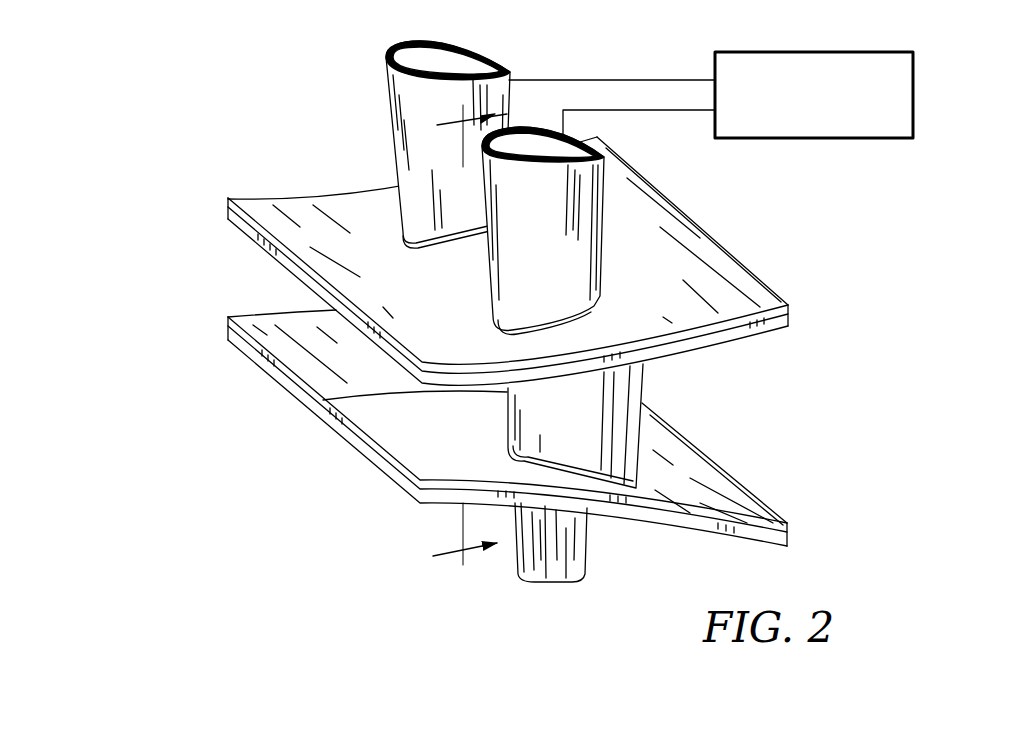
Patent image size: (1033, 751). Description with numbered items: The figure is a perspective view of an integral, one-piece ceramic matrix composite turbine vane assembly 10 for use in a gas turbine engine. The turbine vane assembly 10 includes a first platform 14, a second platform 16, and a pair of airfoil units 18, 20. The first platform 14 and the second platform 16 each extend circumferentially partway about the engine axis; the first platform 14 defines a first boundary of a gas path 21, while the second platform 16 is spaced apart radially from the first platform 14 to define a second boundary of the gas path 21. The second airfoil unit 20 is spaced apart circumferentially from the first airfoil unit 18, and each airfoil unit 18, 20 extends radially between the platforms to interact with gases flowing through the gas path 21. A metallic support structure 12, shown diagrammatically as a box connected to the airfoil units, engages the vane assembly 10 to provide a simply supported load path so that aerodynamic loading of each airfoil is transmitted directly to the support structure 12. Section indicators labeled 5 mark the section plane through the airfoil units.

The turbine vane assembly 10 is at (150, 116).
The support structure 12 is at (855, 52).
The first platform 14 is at (264, 256).
The second platform 16 is at (297, 397).
The first airfoil unit 18 is at (497, 420).
The second airfoil unit 20 is at (390, 173).
The gas path 21 is at (735, 397).
The section line 5- 5 is at (470, 339).